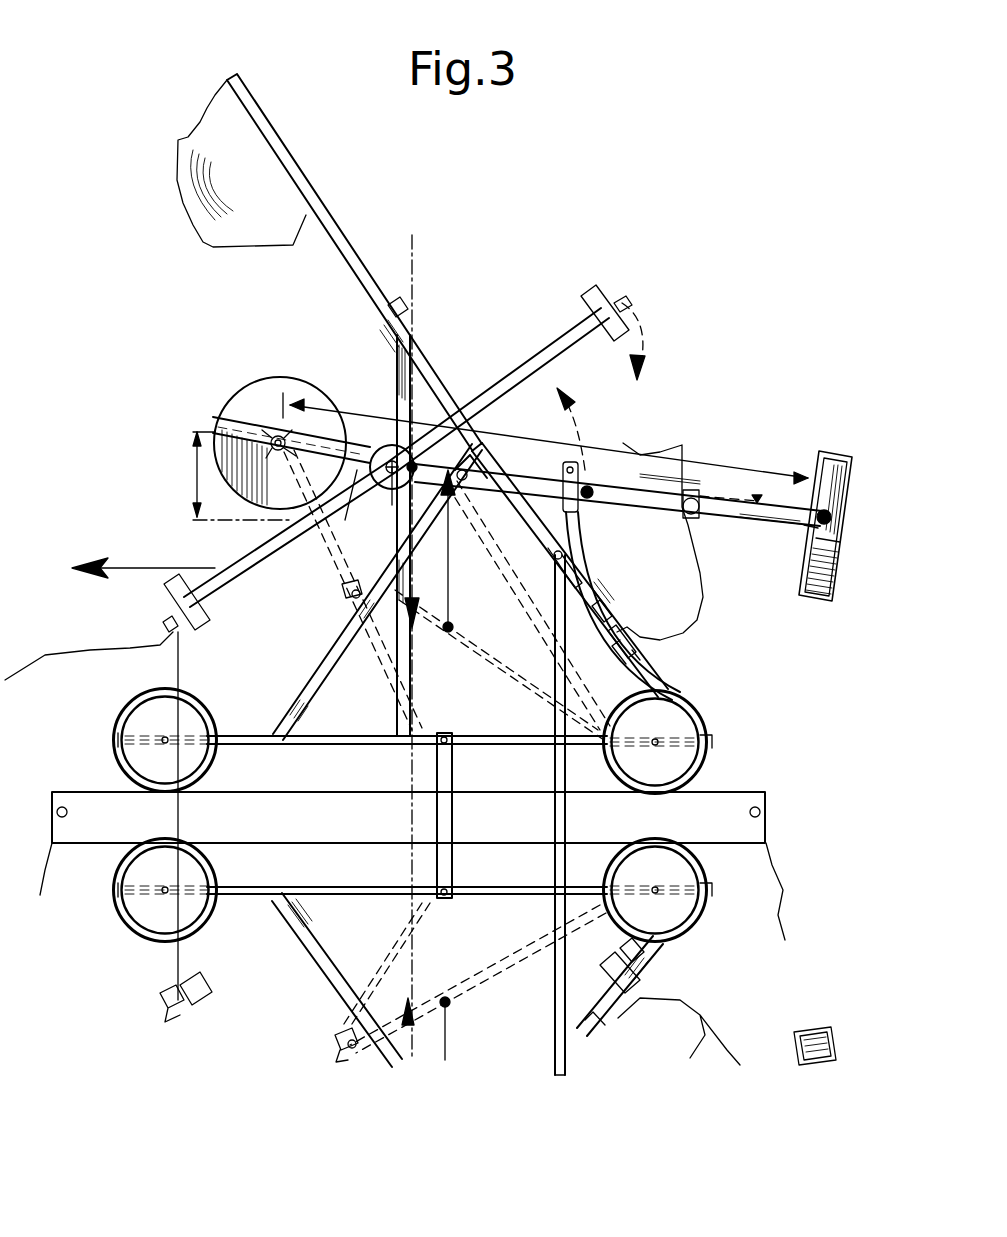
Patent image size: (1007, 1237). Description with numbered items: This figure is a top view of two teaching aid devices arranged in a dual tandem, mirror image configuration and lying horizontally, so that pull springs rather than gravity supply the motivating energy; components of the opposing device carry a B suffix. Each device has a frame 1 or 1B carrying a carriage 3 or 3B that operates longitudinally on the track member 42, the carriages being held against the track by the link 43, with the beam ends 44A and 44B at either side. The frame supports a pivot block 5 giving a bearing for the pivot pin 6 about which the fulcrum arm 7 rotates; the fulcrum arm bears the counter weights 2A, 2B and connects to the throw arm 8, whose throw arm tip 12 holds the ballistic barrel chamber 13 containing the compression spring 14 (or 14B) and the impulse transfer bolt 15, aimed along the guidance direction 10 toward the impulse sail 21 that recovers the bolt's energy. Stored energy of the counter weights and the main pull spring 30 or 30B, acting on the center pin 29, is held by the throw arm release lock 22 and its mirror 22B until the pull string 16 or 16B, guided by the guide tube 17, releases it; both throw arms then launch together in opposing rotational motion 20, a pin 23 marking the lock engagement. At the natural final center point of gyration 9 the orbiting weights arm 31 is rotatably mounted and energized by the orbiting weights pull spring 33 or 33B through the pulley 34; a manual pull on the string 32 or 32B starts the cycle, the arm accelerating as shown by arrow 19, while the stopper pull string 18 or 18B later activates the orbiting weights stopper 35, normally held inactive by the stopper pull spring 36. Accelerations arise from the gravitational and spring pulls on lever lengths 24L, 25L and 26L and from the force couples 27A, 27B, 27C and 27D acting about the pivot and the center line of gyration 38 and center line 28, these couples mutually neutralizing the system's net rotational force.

The frame 1 is at (298, 702).
The frame of mirror image device 1B is at (290, 928).
The counter weight 2A is at (275, 452).
The counter weight 2B is at (233, 396).
The carriage 3 is at (705, 748).
The carriage of mirror image device 3B is at (705, 893).
The pivot block 5 is at (392, 500).
The pivot pin 6 is at (465, 480).
The fulcrum arm 7 is at (344, 508).
The throw arm 8 is at (733, 528).
The natural final center point of gyration 9 is at (392, 476).
The guidance direction 10 is at (215, 568).
The throw arm tip 12 is at (805, 537).
The ballistic barrel chamber 13 is at (828, 470).
The compression spring 14 is at (826, 600).
The compression spring of mirror image device 14B is at (820, 1030).
The impulse transfer bolt 15 is at (829, 465).
The pull string 16 is at (650, 653).
The pull string of mirror image device 16B is at (640, 980).
The guide tube 17 is at (580, 537).
The stopper pull string 18 is at (700, 583).
The stopper pull string of mirror image device 18B is at (697, 1042).
The arrow of orbiting weights arm acceleration 19 is at (642, 368).
The rotational motion of fulcrum arm 20 is at (584, 413).
The impulse sail 21 is at (198, 238).
The throw arm release lock 22 is at (568, 468).
The throw arm release lock of mirror image device 22B is at (568, 1053).
The pivot pin 23 is at (593, 497).
The lever length 24L is at (303, 437).
The lever length 25L is at (421, 445).
The lever length 26L is at (645, 457).
The force couple 27A is at (455, 630).
The force couple 27B is at (415, 628).
The force couple of mirror image device 27C is at (447, 1053).
The force couple of mirror image device 27D is at (410, 1058).
The center line 28 is at (831, 514).
The center pin 29 is at (280, 456).
The main pull spring assembly 30 is at (345, 600).
The main pull spring of mirror image device 30B is at (340, 1050).
The orbiting weights arm 31 is at (524, 368).
The manual pull string 32 is at (163, 642).
The orbiting weights string of mirror image device 32B is at (165, 995).
The orbiting weights pull spring 33 is at (573, 815).
The orbiting weights pull spring of mirror image device 33B is at (575, 992).
The pulley 34 is at (288, 408).
The orbiting weights stopper 35 is at (690, 488).
The stopper pull spring 36 is at (726, 496).
The center line of gyration 38 is at (416, 242).
The track member 42 is at (120, 790).
The link 43 is at (455, 812).
The cross beam 44A is at (52, 845).
The cross beam end 44B is at (770, 905).